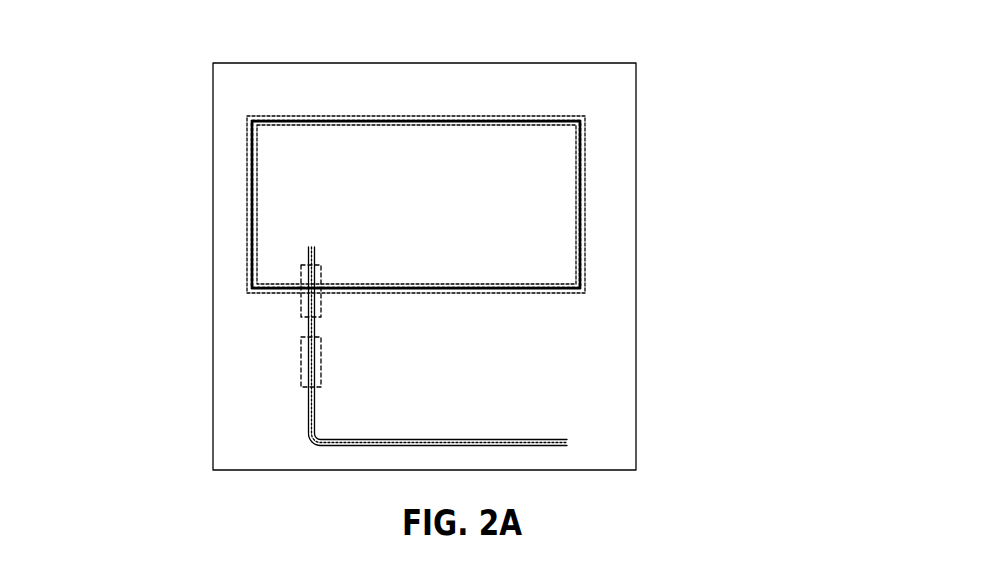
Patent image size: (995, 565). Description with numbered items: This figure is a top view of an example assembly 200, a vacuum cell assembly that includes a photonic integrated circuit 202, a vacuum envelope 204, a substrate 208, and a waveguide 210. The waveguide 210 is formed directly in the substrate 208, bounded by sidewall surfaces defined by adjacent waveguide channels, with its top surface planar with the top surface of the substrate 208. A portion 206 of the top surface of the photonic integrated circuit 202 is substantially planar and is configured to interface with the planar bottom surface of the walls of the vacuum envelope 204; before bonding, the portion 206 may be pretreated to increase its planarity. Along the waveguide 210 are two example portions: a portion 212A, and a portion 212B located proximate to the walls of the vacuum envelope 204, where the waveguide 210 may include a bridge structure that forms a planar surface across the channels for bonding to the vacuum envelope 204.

The assembly 200 is at (138, 40).
The photonic integrated circuit 202 is at (350, 38).
The vacuum envelope 204 is at (490, 100).
The portion of top surface 206 is at (417, 118).
The substrate 208 is at (602, 73).
The waveguide 210 is at (497, 440).
The portion of waveguide 212A is at (301, 387).
The portion of waveguide proximate to walls 212B is at (301, 317).